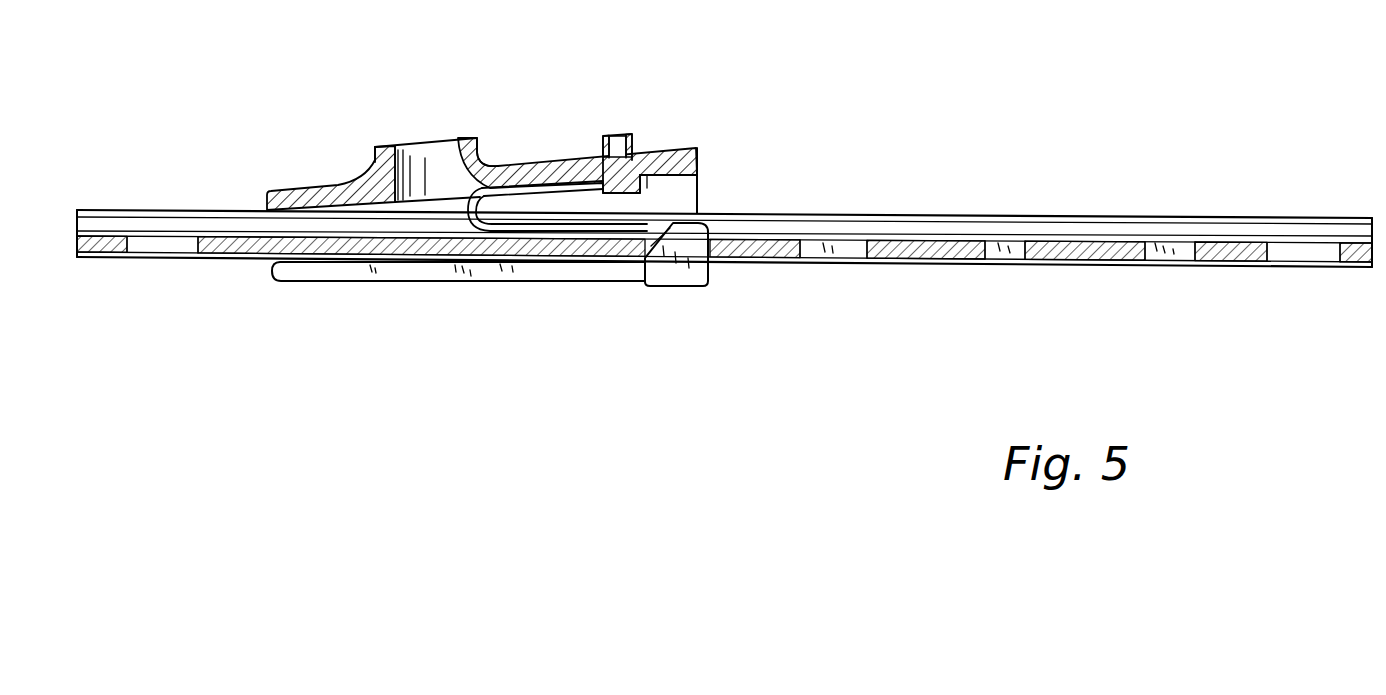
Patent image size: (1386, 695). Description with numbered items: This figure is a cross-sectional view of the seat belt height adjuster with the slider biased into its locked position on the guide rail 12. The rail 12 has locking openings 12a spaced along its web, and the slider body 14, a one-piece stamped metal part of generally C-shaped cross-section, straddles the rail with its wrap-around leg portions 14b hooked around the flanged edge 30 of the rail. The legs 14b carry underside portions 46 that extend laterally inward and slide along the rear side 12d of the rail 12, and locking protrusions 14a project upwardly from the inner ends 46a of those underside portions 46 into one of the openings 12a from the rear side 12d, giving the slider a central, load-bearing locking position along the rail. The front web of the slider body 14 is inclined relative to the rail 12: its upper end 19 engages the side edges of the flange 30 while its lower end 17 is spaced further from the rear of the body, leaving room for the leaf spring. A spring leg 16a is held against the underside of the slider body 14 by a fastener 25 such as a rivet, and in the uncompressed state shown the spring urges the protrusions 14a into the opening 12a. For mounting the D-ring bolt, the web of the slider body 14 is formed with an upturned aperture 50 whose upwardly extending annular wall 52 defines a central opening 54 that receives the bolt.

The guide rail 12 is at (1155, 210).
The locking openings 12a is at (840, 258).
The rear side of the rail 12d is at (1049, 278).
The slider body 14 is at (349, 290).
The protrusions 14a is at (690, 243).
The wrap-around leg portions 14b is at (510, 185).
The spring leg 16a is at (556, 232).
The lower end of the front web 17 is at (708, 150).
The upper end of the web 19 is at (252, 198).
The fastener 25 is at (621, 135).
The flanged edge of the rail 30 is at (1067, 217).
The underside portions 46 is at (447, 287).
The inner ends of the underside portions 46a is at (503, 268).
The upturned aperture 50 is at (490, 134).
The annular wall 52 is at (373, 157).
The central opening 54 is at (441, 147).